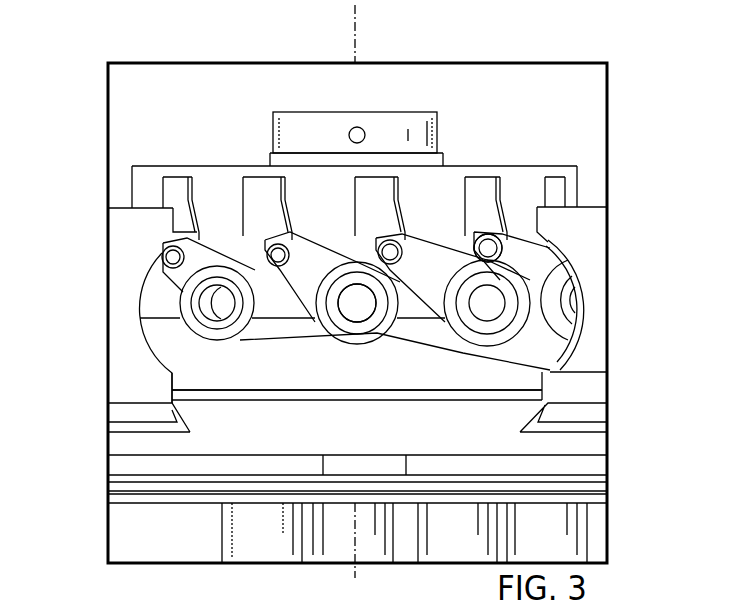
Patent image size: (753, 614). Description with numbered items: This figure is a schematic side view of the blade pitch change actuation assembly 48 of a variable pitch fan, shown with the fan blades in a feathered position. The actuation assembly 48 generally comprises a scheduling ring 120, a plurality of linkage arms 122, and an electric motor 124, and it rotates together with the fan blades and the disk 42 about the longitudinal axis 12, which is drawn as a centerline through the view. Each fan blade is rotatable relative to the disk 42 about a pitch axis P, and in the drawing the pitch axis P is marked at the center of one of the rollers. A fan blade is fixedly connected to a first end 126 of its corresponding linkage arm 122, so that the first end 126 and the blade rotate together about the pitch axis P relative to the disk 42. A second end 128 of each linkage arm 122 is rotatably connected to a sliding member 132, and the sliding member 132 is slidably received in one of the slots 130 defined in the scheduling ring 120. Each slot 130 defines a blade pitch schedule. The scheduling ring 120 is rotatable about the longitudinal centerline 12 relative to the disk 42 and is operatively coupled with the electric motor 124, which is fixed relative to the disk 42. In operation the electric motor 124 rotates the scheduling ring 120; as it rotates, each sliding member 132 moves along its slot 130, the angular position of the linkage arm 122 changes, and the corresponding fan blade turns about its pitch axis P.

The blade pitch change actuation assembly 48 is at (641, 78).
The longitudinal axis 12 is at (355, 30).
The electric motor 124 is at (295, 124).
The scheduling ring 120 is at (221, 180).
The slot 130 is at (257, 177).
The sliding member 132 is at (268, 245).
The linkage arm 122 is at (428, 258).
The first end 126 is at (552, 369).
The second end 128 is at (490, 248).
The disk 42 is at (290, 365).
The pitch axis P is at (358, 308).